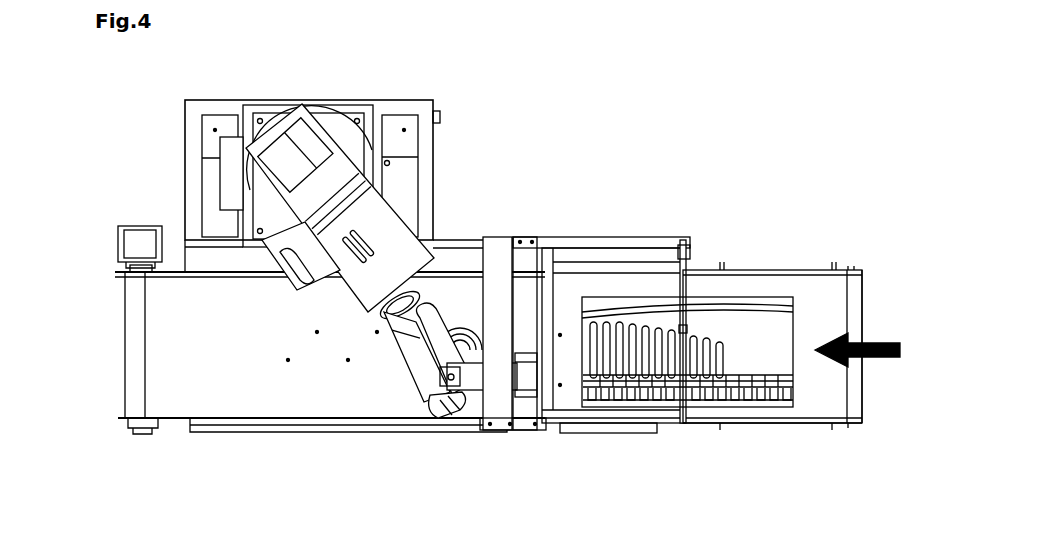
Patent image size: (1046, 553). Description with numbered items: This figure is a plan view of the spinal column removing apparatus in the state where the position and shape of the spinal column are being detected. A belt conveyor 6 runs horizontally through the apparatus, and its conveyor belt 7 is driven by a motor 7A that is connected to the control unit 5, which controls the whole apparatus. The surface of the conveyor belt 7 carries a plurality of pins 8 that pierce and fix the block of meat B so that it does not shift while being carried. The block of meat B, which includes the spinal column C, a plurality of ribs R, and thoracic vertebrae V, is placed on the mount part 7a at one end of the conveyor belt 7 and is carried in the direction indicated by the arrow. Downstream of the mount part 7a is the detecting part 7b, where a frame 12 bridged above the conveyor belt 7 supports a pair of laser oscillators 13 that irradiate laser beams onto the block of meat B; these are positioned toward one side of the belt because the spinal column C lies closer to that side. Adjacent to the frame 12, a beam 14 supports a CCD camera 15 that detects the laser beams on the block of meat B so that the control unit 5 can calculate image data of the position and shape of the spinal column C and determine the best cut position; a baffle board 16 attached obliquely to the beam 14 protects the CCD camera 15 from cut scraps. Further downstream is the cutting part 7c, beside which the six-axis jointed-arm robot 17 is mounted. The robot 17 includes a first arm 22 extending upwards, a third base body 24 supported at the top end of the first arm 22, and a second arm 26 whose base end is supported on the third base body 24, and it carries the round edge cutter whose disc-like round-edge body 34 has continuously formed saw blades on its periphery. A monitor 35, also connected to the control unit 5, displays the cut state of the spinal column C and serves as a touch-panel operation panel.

The control unit 5 is at (232, 180).
The motor 7A is at (140, 243).
The six-axis jointed-arm robot 17 is at (420, 230).
The round-edge body 34 is at (452, 300).
The baffle board 16 is at (505, 245).
The beam 14 is at (530, 240).
The detecting part 7b is at (600, 262).
The ribs R is at (636, 330).
The frame 12 is at (688, 250).
The laser oscillator 13 is at (698, 275).
The block of meat B is at (752, 340).
The mount part 7a is at (787, 285).
The first arm 22 is at (262, 280).
The third base body 24 is at (345, 280).
The second arm 26 is at (428, 360).
The cutting part 7c is at (265, 418).
The pins 8 is at (320, 390).
The CCD camera 15 is at (527, 415).
The monitor 35 is at (598, 435).
The thoracic vertebrae V is at (700, 405).
The conveyor belt 7 is at (723, 413).
The spinal column C is at (760, 413).
The belt conveyor 6 is at (788, 422).